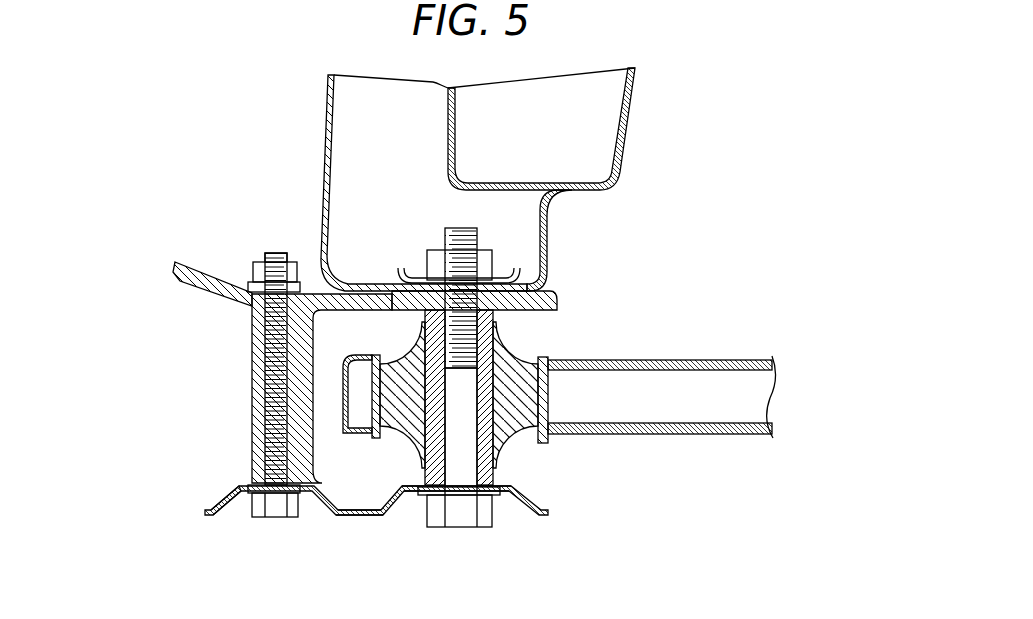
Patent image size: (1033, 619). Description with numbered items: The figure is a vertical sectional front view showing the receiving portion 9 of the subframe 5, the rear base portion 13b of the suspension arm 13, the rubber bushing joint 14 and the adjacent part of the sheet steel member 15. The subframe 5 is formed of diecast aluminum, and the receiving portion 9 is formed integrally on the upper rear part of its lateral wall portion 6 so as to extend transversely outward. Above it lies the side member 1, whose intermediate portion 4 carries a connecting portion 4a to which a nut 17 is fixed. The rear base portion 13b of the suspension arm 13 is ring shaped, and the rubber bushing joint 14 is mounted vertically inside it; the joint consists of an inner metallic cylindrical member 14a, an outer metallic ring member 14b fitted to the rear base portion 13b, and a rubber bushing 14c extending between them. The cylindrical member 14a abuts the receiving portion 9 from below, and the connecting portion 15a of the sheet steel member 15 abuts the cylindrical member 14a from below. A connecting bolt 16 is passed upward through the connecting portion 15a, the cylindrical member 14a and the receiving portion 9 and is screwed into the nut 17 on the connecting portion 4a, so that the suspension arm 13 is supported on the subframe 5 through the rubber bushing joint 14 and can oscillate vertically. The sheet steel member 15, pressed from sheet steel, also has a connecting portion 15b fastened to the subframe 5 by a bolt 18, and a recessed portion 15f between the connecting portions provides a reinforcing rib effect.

The side member 1 is at (328, 136).
The intermediate portion 4 is at (632, 105).
The connecting portion 4a is at (548, 230).
The subframe 5 is at (213, 273).
The lateral wall portion 6 is at (315, 360).
The receiving portion 9 is at (553, 302).
The suspension arm 13 is at (701, 362).
The rear base portion 13b is at (352, 440).
The rubber bushing joint 14 is at (530, 430).
The inner metallic cylindrical member 14a is at (521, 515).
The outer metallic ring member 14b is at (511, 434).
The rubber bushing 14c is at (485, 473).
The sheet steel member 15 is at (232, 490).
The connecting portion 15a is at (414, 497).
The connecting portion 15b is at (243, 489).
The recessed portion 15f is at (357, 497).
The connecting bolt 16 is at (461, 520).
The nut 17 is at (433, 260).
The bolt 18 is at (272, 505).